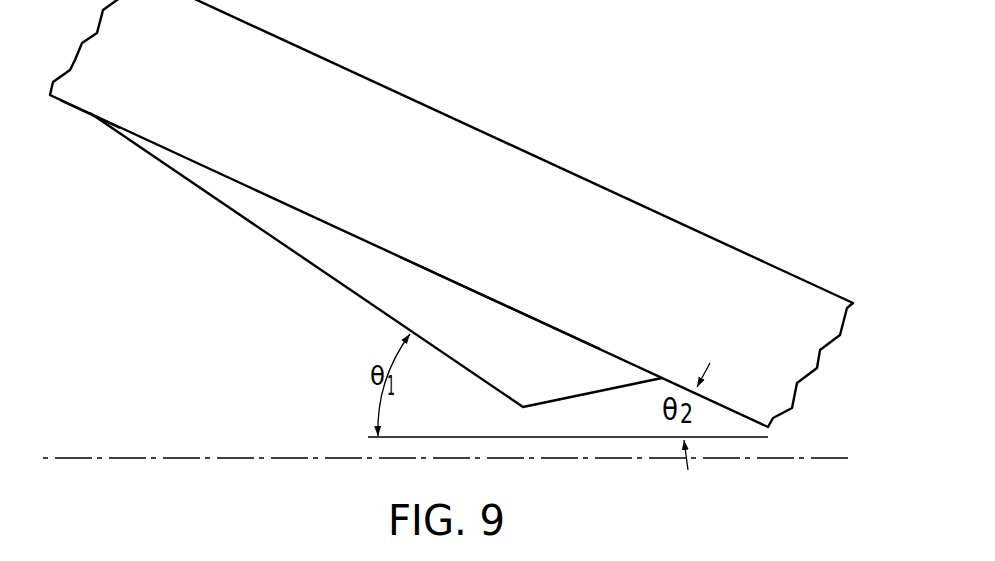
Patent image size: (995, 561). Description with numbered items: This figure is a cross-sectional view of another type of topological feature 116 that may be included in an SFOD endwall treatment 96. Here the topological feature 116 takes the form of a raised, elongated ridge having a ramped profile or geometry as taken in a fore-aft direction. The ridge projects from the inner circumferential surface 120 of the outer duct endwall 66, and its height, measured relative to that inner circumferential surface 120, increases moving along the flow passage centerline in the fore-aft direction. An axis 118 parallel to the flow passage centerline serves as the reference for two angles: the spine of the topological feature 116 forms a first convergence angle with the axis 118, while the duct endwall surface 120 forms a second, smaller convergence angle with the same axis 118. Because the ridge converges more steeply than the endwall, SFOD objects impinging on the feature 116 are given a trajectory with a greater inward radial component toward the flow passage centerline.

The outer duct endwall 66 is at (432, 108).
The SFOD endwall treatment 96 is at (131, 193).
The topological feature 116 is at (285, 248).
The axis 118 is at (113, 457).
The inner circumferential surface 120 is at (487, 295).